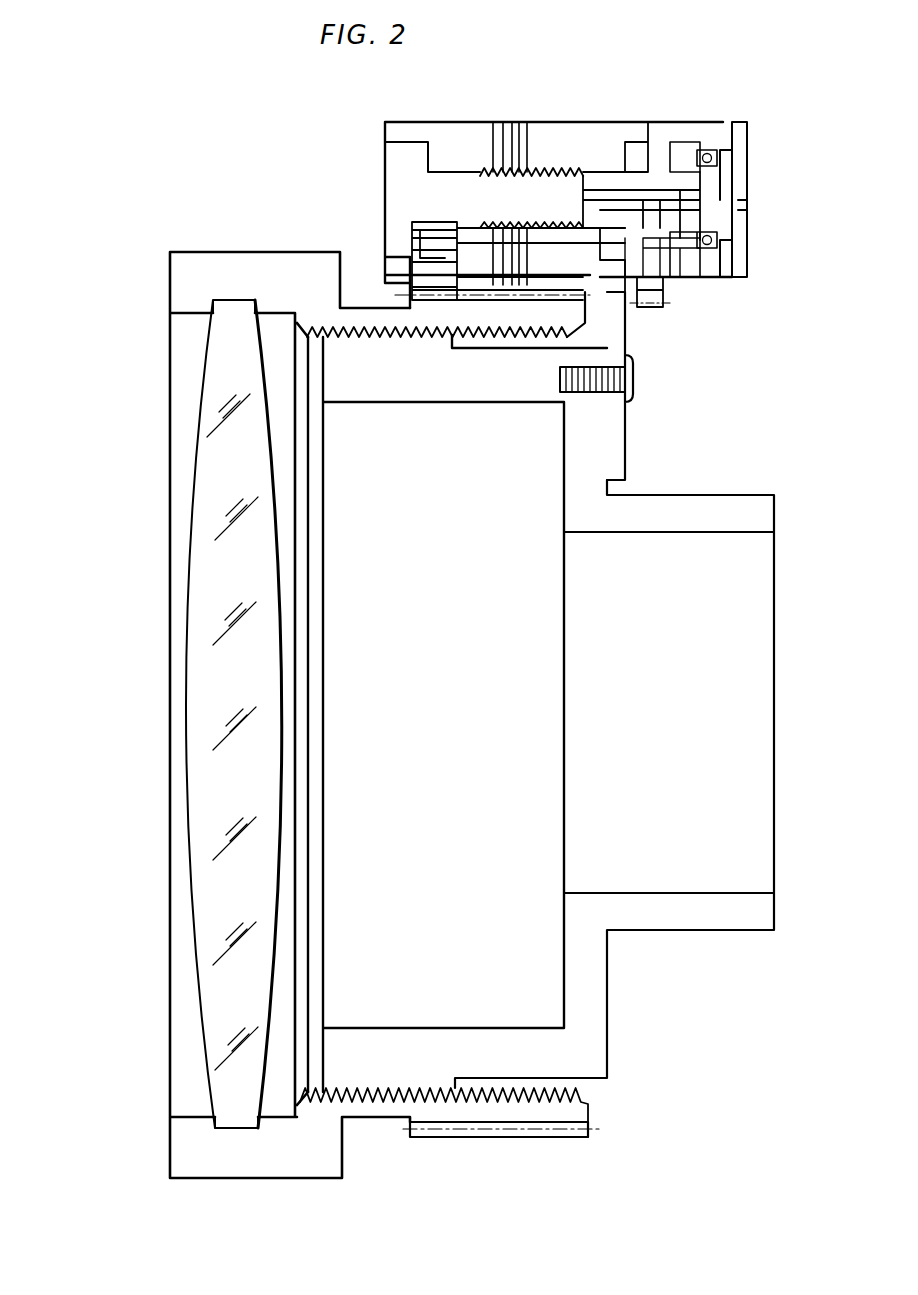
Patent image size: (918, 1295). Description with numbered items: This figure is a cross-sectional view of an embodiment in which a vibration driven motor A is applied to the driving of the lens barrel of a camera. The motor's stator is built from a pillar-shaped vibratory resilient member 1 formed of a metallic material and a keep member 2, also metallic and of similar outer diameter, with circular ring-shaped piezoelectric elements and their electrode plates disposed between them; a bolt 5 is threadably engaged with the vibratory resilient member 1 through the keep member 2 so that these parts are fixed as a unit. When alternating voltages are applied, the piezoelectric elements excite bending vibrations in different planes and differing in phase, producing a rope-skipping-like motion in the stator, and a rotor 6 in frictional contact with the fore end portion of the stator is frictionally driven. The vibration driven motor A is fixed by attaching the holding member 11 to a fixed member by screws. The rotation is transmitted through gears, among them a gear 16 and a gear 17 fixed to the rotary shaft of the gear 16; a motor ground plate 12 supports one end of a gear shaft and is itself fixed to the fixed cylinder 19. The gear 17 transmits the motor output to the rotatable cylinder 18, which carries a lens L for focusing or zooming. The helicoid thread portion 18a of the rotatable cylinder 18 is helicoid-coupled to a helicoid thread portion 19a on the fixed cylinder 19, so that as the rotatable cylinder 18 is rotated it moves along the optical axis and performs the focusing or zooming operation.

The vibratory resilient member 1 is at (542, 136).
The keep member 2 is at (447, 143).
The bolt 5 is at (398, 165).
The rotor 6 is at (667, 130).
The holding member 11 is at (742, 135).
The motor ground plate 12 is at (618, 442).
The gear 16 is at (655, 290).
The gear 17 is at (415, 243).
The rotatable cylinder 18 is at (218, 266).
The helicoid thread portion 18a is at (553, 340).
The fixed cylinder 19 is at (465, 380).
The helicoid thread portion 19a is at (380, 340).
The vibration driven motor A is at (567, 143).
The lens L is at (206, 583).